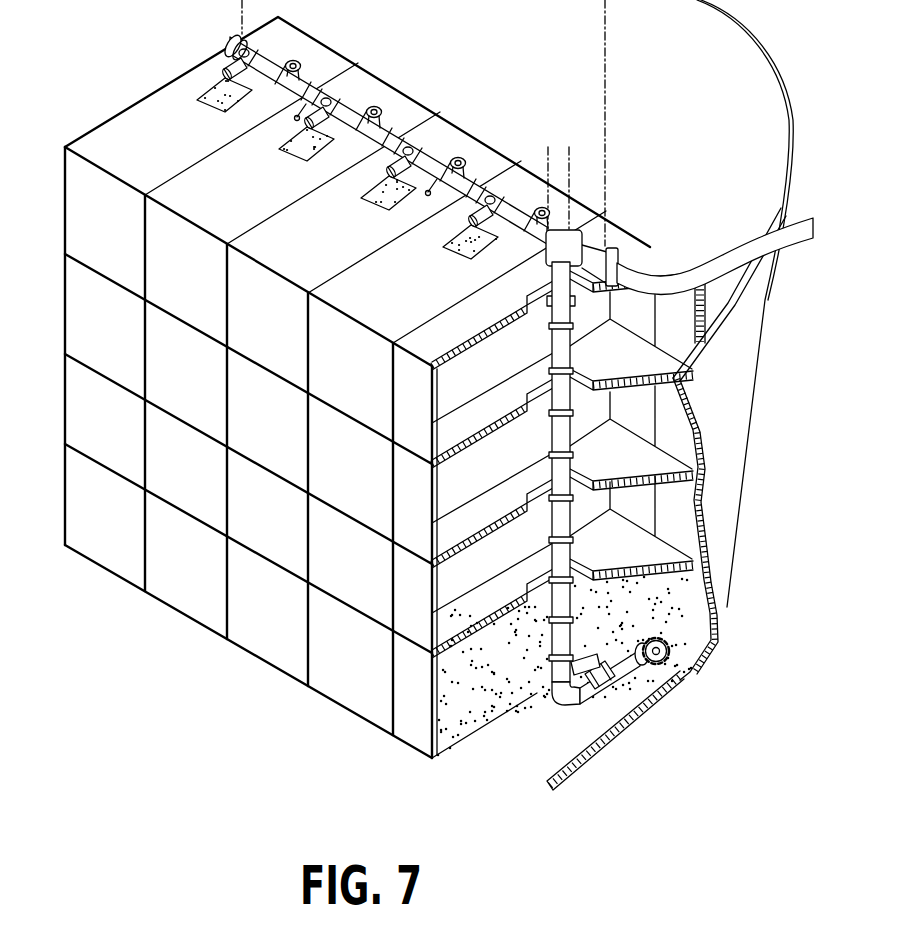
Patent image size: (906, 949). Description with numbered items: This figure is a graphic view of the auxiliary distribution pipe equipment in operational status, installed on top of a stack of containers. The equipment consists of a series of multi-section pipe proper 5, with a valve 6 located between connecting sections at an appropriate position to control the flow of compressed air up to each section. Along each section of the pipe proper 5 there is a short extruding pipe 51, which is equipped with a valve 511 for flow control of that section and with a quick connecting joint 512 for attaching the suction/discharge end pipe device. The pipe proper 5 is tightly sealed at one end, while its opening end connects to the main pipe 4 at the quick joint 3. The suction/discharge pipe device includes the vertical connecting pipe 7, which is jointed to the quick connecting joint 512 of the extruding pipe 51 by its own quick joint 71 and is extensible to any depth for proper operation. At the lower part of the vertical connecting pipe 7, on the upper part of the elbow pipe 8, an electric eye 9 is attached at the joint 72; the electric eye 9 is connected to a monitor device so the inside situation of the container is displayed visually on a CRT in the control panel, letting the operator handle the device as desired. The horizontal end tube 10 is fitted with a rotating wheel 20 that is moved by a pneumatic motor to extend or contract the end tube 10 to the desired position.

The quick joint 3 is at (619, 262).
The main pipe 4 is at (723, 258).
The pipe proper 5 is at (340, 100).
The valve 6 is at (301, 63).
The vertical connecting pipe 7 is at (568, 524).
The elbow pipe 8 is at (576, 697).
The electric eye 9 is at (577, 661).
The horizontal end tube 10 is at (611, 690).
The rotating wheel 20 is at (684, 653).
The extruding pipe 51 is at (347, 168).
The valve 511 is at (250, 43).
The quick connecting joint 512 is at (226, 72).
The quick joint 71 is at (551, 300).
The joint 72 is at (549, 704).